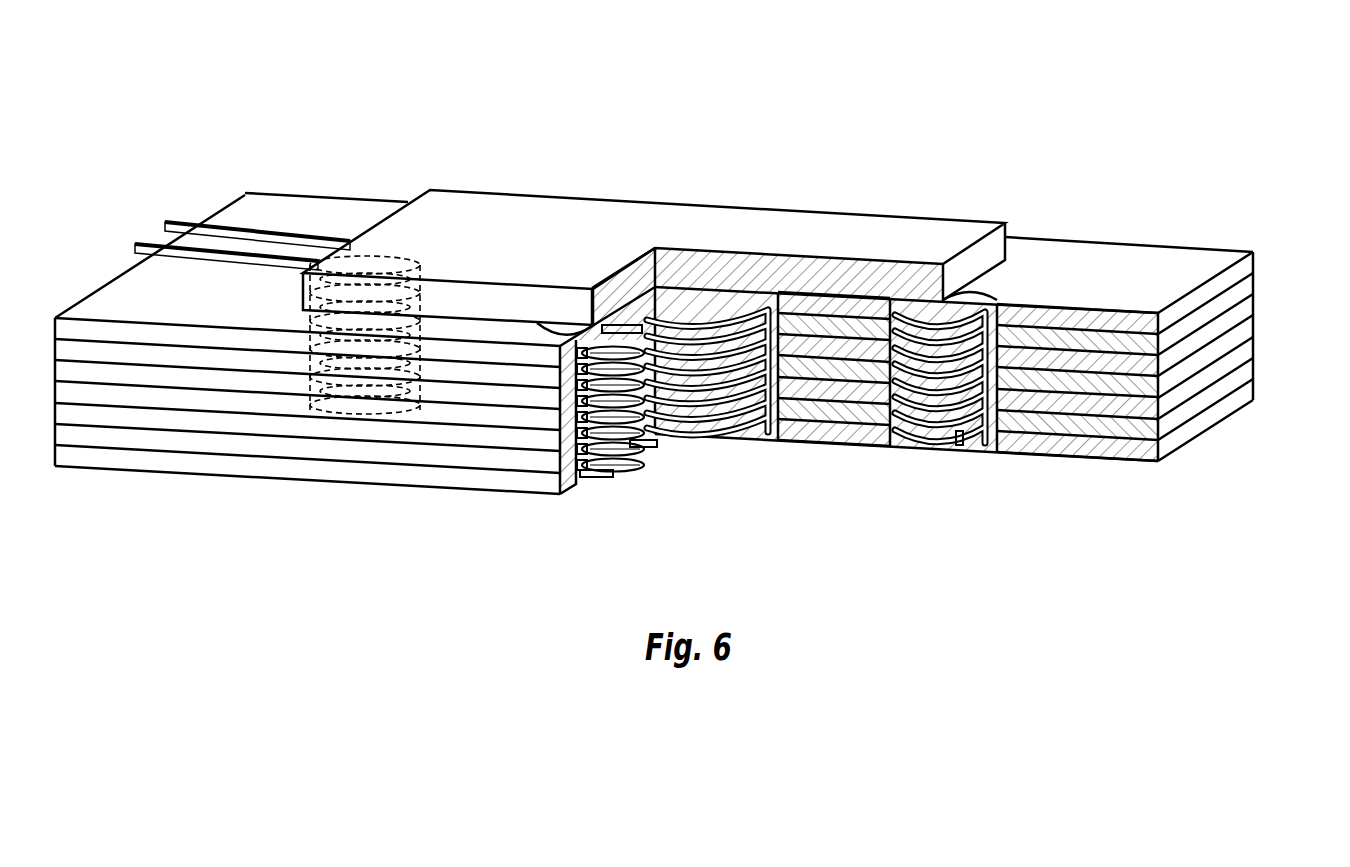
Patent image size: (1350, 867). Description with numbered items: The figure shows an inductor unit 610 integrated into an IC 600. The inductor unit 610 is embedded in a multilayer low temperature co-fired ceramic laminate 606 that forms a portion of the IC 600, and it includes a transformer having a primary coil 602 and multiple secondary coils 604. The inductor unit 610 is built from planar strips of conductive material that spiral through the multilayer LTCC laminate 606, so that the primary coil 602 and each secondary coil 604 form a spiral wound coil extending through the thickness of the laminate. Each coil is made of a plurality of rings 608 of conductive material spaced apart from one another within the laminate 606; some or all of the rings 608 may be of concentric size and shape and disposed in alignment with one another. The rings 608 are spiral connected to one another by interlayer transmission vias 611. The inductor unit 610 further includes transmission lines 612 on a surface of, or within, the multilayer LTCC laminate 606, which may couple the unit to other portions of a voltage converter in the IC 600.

The integrated circuit 600 is at (412, 74).
The primary coil 602 is at (717, 457).
The secondary coils 604 is at (289, 319).
The multilayer low temperature co-fired ceramic (LTCC) laminate 606 is at (1255, 308).
The rings 608 is at (634, 450).
The inductor unit 610 is at (879, 517).
The interlayer transmission vias 611 is at (779, 310).
The transmission lines 612 is at (271, 211).